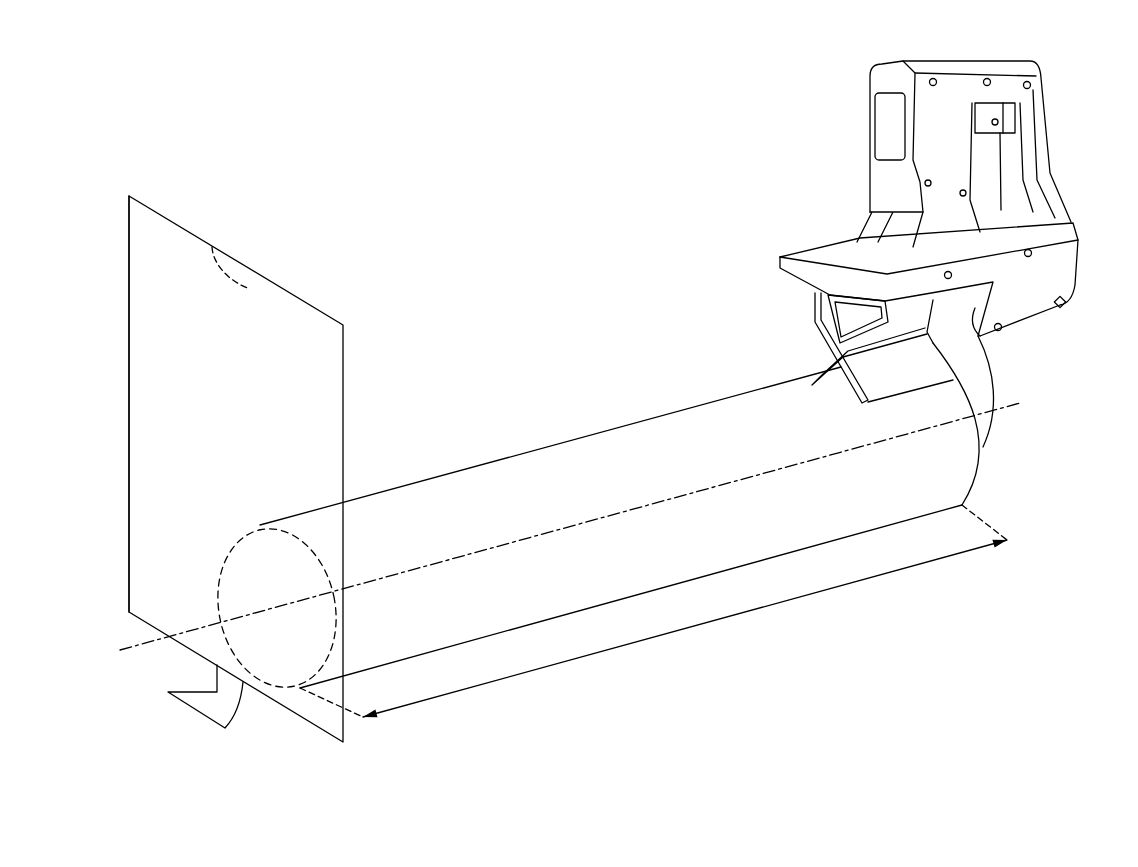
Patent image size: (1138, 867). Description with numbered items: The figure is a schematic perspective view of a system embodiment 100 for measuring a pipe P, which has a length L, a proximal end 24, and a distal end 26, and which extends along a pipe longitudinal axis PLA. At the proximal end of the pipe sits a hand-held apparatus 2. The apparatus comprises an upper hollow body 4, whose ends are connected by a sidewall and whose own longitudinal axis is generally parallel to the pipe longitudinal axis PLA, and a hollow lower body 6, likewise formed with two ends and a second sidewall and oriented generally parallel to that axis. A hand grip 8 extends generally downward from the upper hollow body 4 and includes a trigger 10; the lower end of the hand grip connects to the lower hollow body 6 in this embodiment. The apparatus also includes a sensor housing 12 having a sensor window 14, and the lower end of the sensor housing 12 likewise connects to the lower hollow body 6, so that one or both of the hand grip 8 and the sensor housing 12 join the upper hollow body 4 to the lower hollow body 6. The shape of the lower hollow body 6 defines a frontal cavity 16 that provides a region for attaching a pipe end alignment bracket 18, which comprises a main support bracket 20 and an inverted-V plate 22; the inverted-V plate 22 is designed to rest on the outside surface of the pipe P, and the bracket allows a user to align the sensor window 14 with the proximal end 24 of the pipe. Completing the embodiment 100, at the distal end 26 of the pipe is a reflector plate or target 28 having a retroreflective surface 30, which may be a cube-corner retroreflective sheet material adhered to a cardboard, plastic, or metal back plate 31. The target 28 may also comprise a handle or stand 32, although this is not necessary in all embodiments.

The embodiment 100 is at (613, 79).
The hand-held apparatus 2 is at (1049, 43).
The upper hollow body 4 is at (962, 77).
The lower hollow body 6 is at (1057, 283).
The hand grip 8 is at (1037, 168).
The trigger 10 is at (1000, 122).
The sensor housing 12 is at (921, 112).
The sensor window 14 is at (877, 132).
The frontal cavity 16 is at (979, 338).
The pipe end alignment bracket 18 is at (827, 343).
The main support bracket 20 is at (813, 313).
The inverted-V plate 22 is at (907, 393).
The proximal end 24 is at (985, 448).
The distal end 26 is at (210, 577).
The reflector plate or target 28 is at (348, 388).
The retroreflective surface 30 is at (212, 247).
The back plate 31 is at (143, 281).
The handle or stand 32 is at (200, 713).
The pipe P is at (653, 433).
The pipe longitudinal axis PLA is at (547, 533).
The length L is at (680, 628).